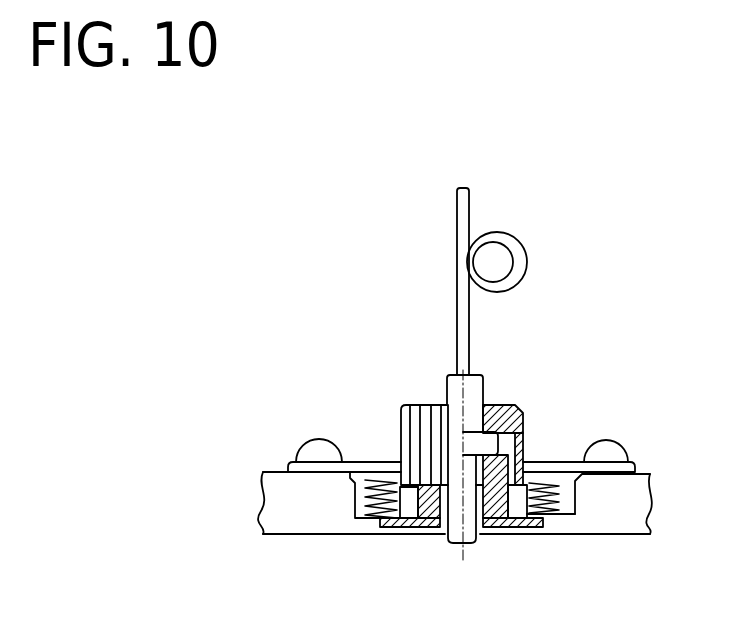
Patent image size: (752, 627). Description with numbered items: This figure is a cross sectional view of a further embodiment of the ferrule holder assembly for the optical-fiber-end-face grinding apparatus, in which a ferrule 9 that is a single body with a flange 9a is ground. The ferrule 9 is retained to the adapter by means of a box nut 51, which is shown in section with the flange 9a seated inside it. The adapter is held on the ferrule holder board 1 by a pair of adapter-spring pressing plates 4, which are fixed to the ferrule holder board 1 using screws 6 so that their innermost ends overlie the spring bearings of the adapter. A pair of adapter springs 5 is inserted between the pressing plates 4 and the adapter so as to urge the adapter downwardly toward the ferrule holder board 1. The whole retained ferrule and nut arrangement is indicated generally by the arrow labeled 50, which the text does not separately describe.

The ferrule holder board 1 is at (288, 492).
The adapter-spring pressing plate 4 is at (371, 466).
The adapter spring 5 is at (375, 519).
The screw 6 is at (318, 448).
The ferrule 9 is at (468, 525).
The flange 9a is at (480, 443).
The lock assembly 50 is at (547, 353).
The box nut 51 is at (523, 441).